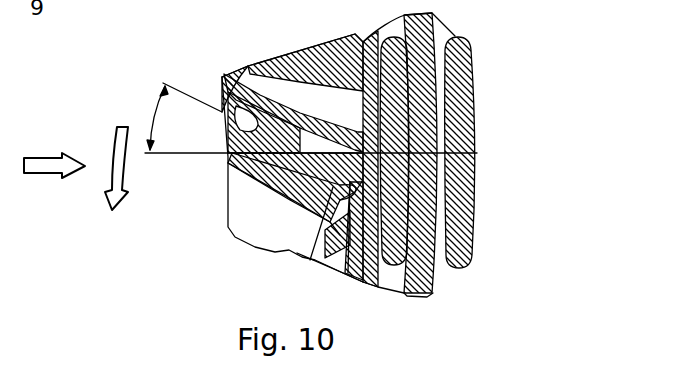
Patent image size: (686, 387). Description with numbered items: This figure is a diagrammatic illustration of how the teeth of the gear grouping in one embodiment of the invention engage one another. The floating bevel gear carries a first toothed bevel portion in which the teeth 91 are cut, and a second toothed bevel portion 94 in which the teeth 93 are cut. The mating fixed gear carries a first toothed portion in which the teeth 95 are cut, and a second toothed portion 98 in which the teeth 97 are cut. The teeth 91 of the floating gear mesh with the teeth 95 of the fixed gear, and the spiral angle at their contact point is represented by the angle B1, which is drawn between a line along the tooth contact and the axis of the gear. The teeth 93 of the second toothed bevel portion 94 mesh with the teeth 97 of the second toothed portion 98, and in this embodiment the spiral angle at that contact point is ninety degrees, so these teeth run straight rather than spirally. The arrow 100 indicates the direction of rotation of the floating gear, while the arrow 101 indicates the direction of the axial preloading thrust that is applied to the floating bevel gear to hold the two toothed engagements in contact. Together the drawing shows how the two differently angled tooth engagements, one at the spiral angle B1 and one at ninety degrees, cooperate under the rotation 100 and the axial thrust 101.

The teeth 91 is at (247, 85).
The teeth 93 is at (433, 273).
The second toothed bevel portion 94 is at (433, 25).
The teeth 95 is at (305, 258).
The teeth 97 is at (478, 183).
The second toothed portion 98 is at (478, 72).
The arrow 100 is at (118, 130).
The arrow 101 is at (60, 178).
The spiral angle B1 is at (311, 118).